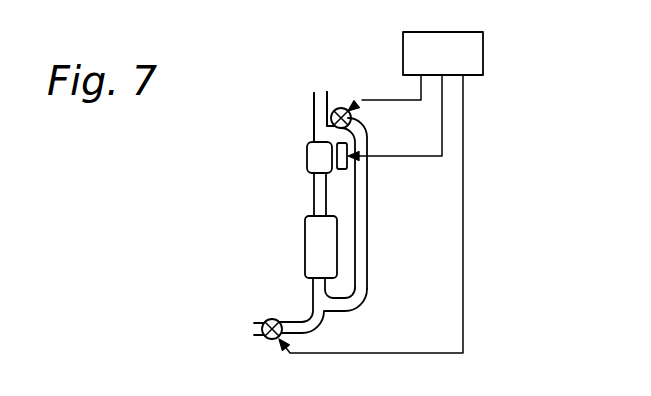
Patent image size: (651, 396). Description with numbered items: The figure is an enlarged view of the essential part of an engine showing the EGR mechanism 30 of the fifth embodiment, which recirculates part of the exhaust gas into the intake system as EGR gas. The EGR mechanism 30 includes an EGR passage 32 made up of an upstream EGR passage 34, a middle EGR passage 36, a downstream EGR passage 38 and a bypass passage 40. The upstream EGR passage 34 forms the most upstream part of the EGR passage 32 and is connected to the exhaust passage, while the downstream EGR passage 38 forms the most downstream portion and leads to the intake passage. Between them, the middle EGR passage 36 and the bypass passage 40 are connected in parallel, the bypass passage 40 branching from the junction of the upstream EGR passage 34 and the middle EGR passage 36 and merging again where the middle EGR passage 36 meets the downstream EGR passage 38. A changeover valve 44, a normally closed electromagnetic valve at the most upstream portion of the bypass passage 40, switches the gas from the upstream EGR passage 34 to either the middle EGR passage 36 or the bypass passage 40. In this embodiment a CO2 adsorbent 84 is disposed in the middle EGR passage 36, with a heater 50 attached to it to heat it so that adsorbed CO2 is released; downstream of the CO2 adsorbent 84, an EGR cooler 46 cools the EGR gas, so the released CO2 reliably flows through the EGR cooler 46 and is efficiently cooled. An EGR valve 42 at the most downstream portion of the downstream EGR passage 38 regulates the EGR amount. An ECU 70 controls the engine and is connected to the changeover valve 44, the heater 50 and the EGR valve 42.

The EGR mechanism 30 is at (232, 181).
The EGR passage 32 is at (380, 238).
The upstream EGR passage 34 is at (313, 103).
The middle EGR passage 36 is at (313, 193).
The downstream EGR passage 38 is at (265, 321).
The bypass passage 40 is at (368, 283).
The EGR valve 42 is at (271, 319).
The changeover valve 44 is at (341, 107).
The EGR cooler 46 is at (305, 238).
The heater 50 is at (346, 171).
The ECU 70 is at (485, 53).
The CO2 adsorbent 84 is at (307, 154).